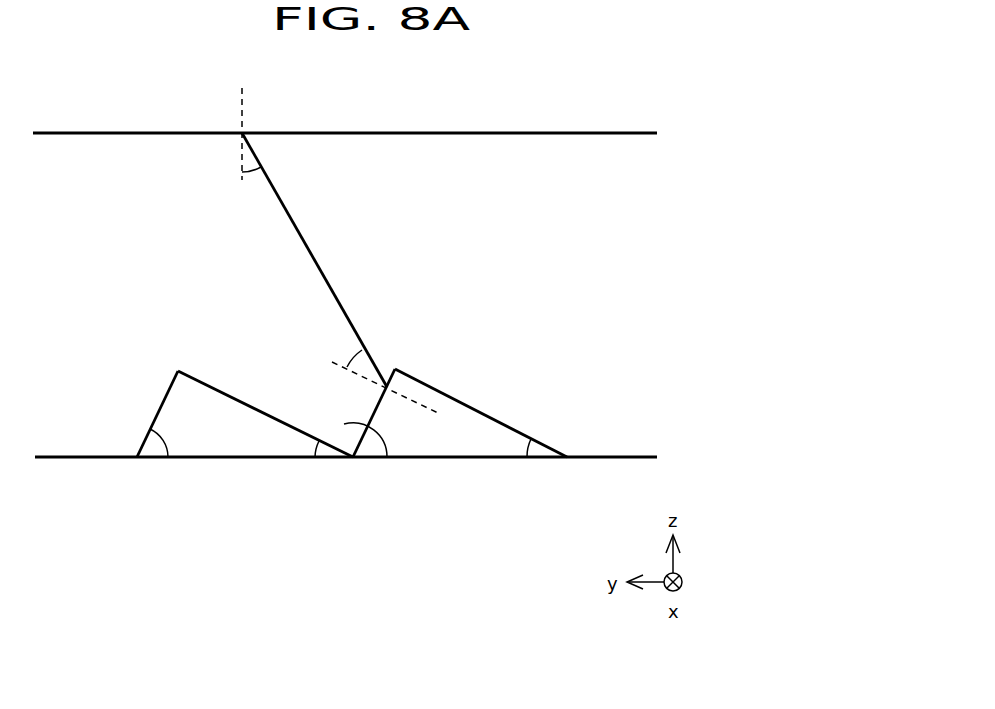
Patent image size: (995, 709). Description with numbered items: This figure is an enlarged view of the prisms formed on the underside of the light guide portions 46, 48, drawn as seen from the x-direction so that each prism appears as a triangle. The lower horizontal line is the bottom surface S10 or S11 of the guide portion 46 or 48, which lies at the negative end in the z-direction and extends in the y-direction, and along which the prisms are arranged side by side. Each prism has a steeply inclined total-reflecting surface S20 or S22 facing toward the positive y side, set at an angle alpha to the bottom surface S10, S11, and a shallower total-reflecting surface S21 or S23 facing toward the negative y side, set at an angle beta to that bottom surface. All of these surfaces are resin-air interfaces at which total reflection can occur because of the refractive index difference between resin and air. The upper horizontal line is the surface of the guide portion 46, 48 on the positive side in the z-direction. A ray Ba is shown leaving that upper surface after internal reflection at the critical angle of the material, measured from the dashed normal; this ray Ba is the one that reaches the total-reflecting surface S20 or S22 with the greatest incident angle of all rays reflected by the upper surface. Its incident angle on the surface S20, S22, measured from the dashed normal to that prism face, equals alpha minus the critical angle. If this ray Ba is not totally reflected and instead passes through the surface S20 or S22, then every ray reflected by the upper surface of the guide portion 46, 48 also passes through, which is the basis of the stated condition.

The guide portion 46 is at (345, 113).
The guide portion 48 is at (460, 133).
The bottom surface S10 is at (346, 482).
The bottom surface S11 is at (475, 458).
The total-reflecting surface S20 is at (203, 441).
The total-reflecting surface S22 is at (167, 397).
The total-reflecting surface S21 is at (367, 390).
The total-reflecting surface S23 is at (218, 390).
The ray Ba is at (313, 257).